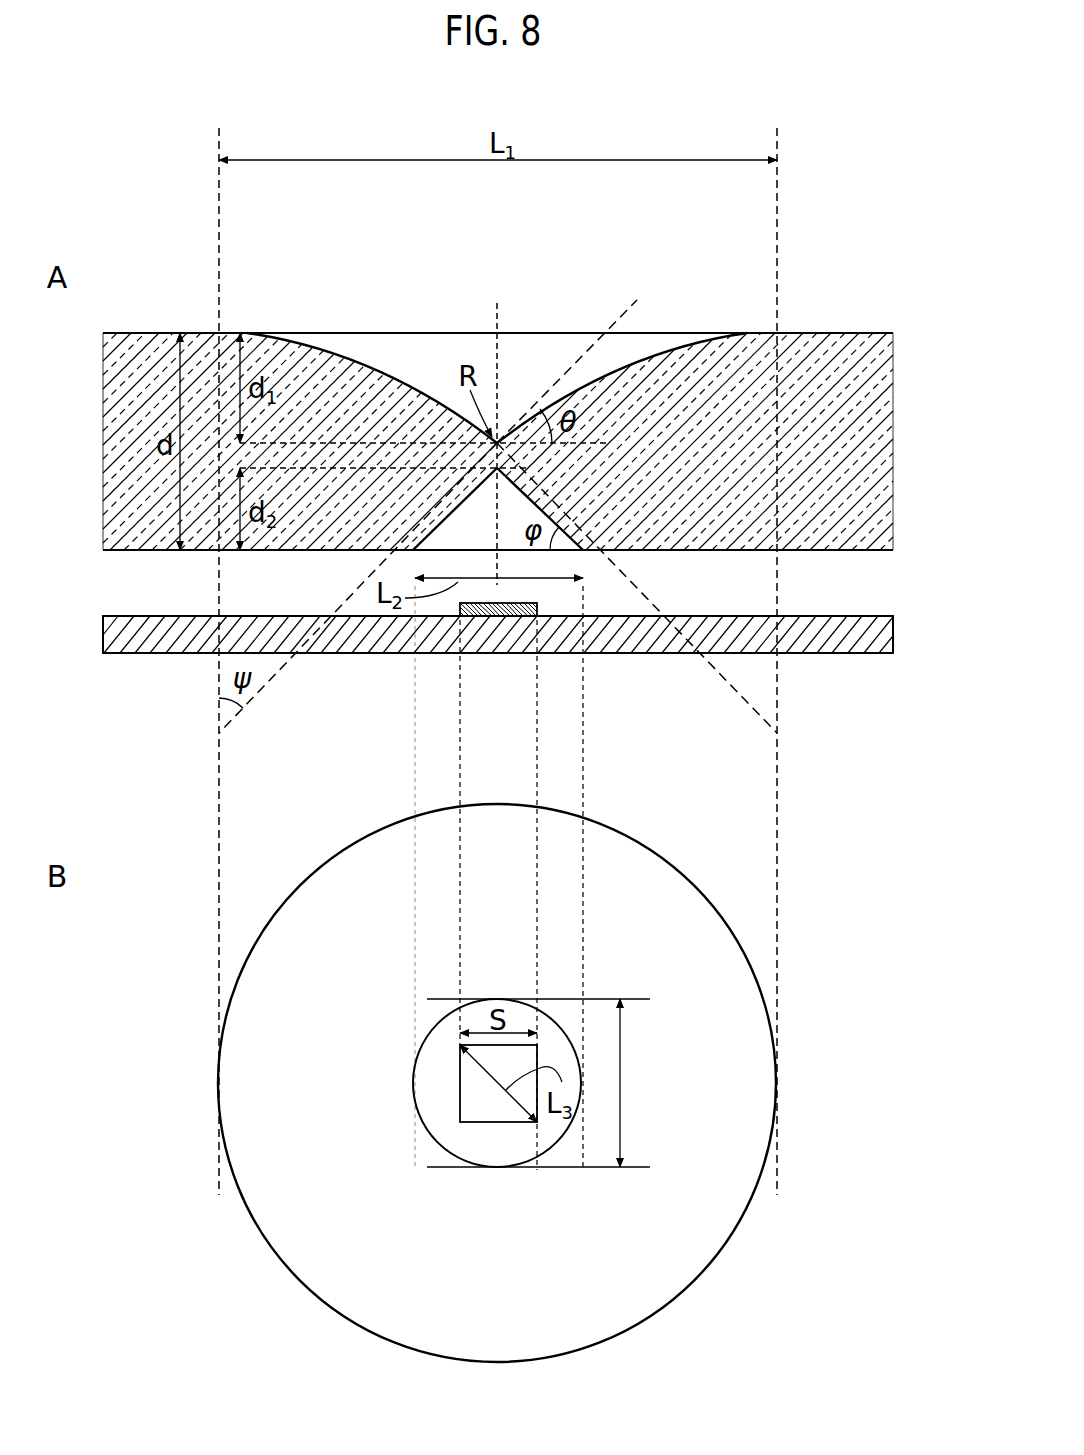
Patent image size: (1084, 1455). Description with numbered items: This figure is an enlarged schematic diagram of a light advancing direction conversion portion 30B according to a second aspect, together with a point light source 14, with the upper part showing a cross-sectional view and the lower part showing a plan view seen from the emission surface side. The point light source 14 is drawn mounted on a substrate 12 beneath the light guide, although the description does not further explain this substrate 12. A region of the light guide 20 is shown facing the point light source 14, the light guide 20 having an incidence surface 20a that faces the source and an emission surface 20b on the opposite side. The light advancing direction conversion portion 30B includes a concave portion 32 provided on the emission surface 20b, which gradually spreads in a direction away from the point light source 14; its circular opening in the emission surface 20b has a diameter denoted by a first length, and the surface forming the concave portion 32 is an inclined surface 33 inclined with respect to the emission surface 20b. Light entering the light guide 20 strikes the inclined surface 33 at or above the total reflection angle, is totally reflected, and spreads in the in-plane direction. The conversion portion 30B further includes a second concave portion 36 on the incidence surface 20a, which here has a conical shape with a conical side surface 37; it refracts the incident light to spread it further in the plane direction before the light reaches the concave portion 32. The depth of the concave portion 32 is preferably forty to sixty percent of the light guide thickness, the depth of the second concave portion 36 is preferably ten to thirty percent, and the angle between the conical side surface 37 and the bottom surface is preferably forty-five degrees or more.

The substrate 12 is at (843, 616).
The point light source 14 is at (540, 592).
The light guide 20 is at (808, 345).
The incidence surface 20a is at (882, 553).
The emission surface 20b is at (879, 332).
The light advancing direction conversion portion 30B is at (582, 264).
The concave portion 32 is at (511, 358).
The inclined surface 33 is at (372, 360).
The second concave portion 36 is at (451, 538).
The conical side surface 37 is at (527, 491).